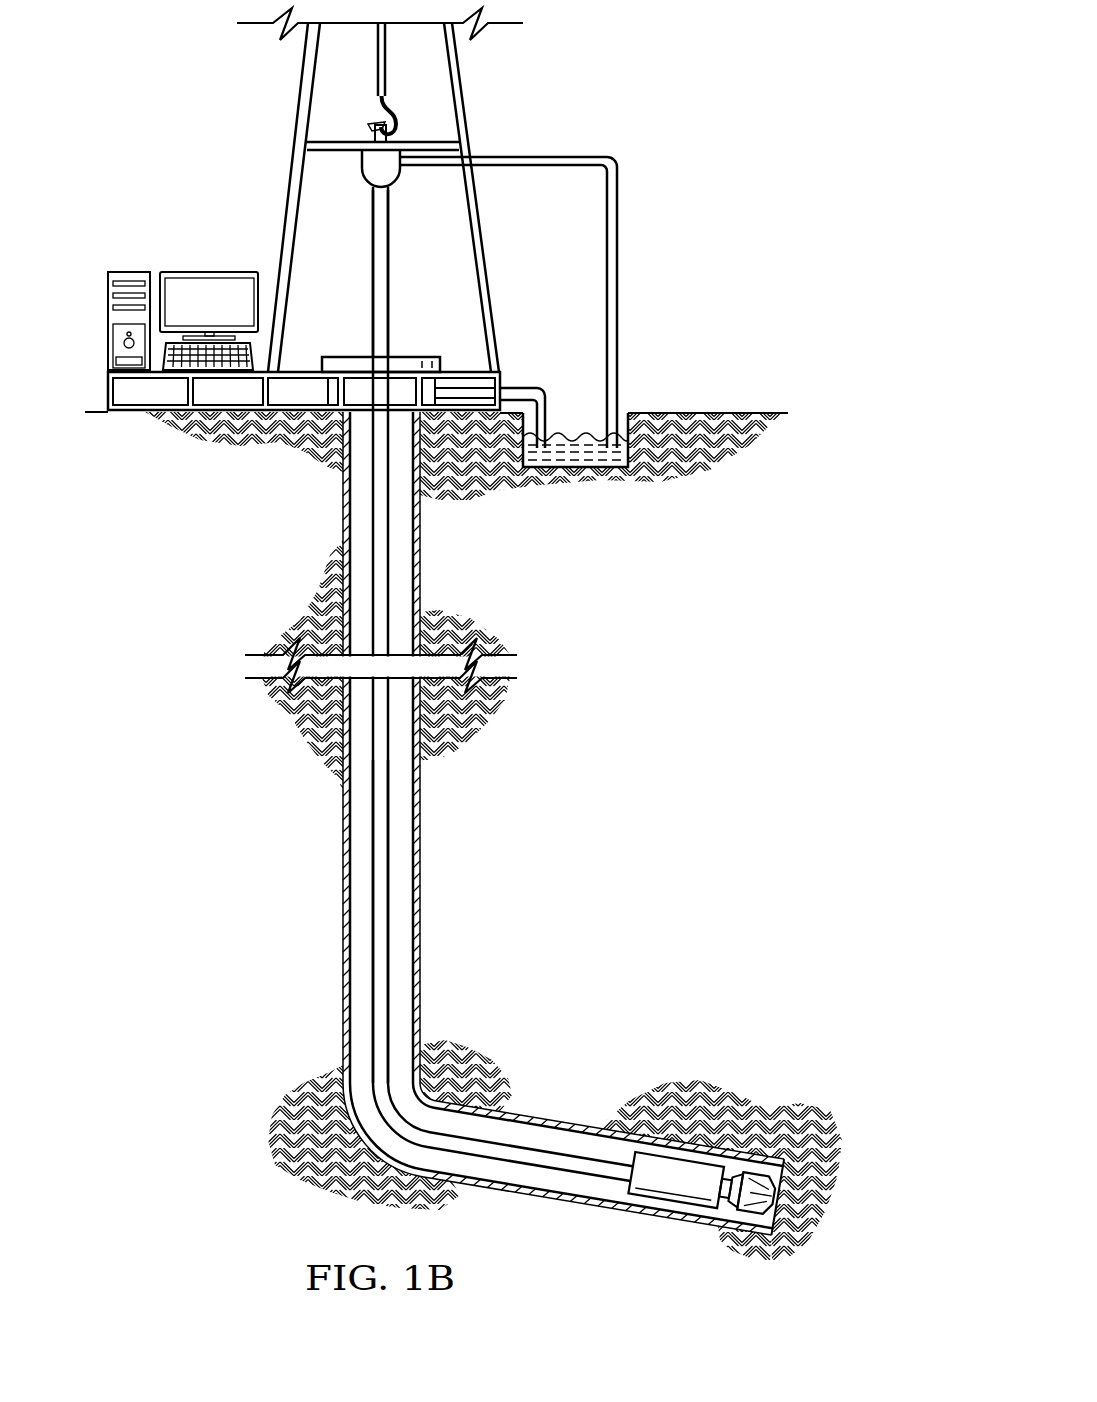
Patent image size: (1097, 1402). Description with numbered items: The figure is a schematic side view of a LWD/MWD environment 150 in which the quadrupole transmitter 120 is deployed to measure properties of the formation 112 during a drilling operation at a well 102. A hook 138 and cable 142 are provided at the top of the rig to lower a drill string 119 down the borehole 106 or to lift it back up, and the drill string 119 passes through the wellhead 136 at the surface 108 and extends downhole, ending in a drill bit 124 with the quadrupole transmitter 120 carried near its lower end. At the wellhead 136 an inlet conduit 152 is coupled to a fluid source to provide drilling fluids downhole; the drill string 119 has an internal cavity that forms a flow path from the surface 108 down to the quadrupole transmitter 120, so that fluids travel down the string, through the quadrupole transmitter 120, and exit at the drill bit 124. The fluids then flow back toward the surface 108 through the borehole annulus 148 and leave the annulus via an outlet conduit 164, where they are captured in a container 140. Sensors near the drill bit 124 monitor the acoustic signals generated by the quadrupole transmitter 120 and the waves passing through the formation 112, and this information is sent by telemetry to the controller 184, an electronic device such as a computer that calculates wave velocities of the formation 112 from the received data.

The well 102 is at (408, 348).
The borehole 106 is at (421, 565).
The surface 108 is at (760, 412).
The formation 112 is at (582, 1076).
The drill string 119 is at (380, 930).
The quadrupole transmitter 120 is at (672, 1201).
The drill bit 124 is at (760, 1216).
The wellhead 136 is at (346, 357).
The hook 138 is at (398, 122).
The container 140 is at (580, 468).
The cable 142 is at (377, 82).
The borehole annulus 148 is at (360, 497).
The LWD/MWD environment 150 is at (224, 173).
The inlet conduit 152 is at (560, 157).
The outlet conduit 164 is at (520, 388).
The controller 184 is at (130, 272).